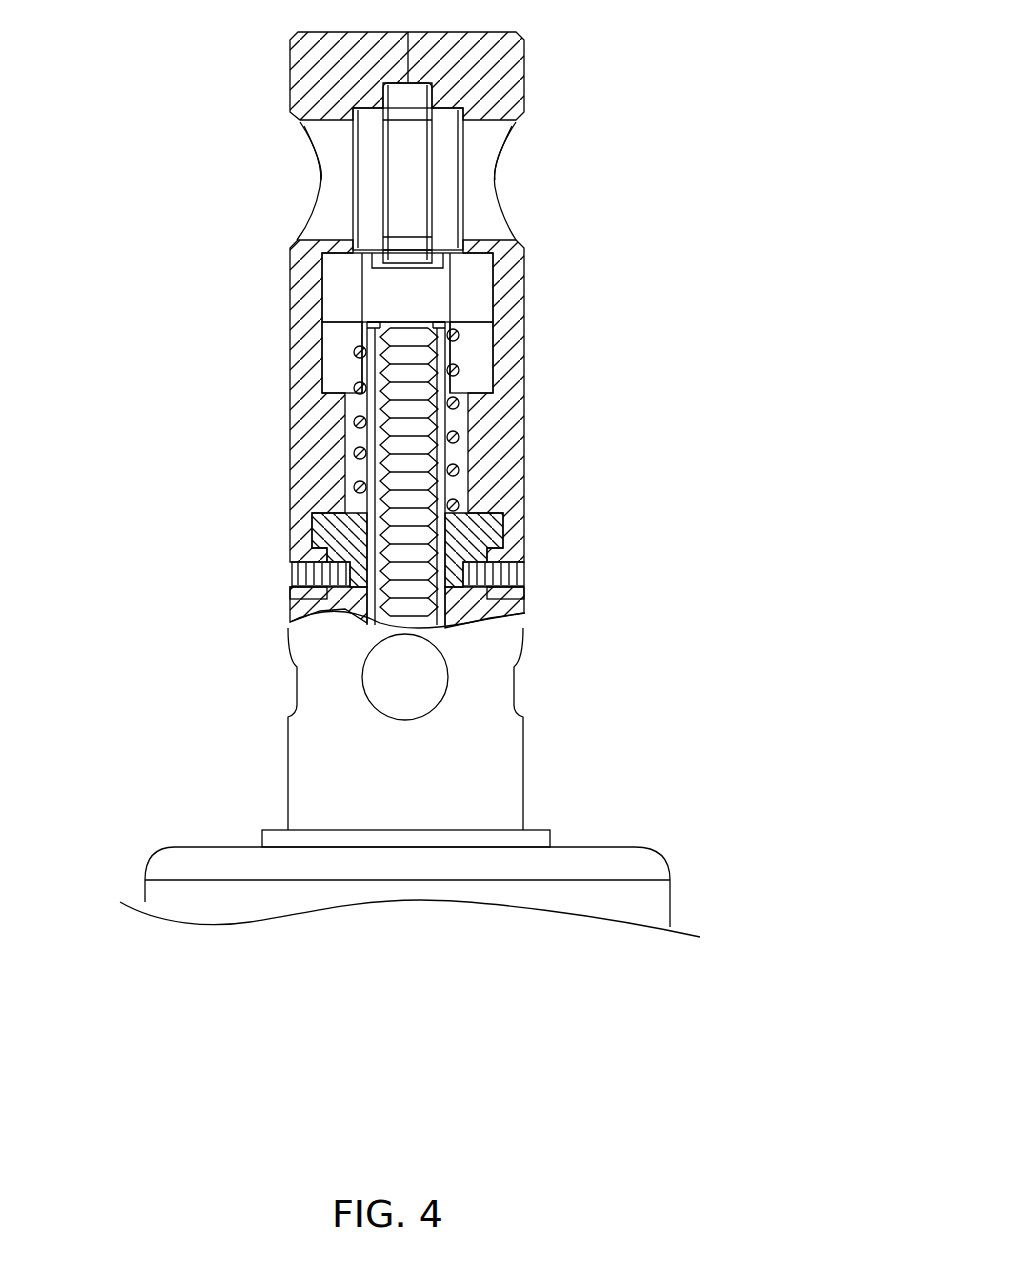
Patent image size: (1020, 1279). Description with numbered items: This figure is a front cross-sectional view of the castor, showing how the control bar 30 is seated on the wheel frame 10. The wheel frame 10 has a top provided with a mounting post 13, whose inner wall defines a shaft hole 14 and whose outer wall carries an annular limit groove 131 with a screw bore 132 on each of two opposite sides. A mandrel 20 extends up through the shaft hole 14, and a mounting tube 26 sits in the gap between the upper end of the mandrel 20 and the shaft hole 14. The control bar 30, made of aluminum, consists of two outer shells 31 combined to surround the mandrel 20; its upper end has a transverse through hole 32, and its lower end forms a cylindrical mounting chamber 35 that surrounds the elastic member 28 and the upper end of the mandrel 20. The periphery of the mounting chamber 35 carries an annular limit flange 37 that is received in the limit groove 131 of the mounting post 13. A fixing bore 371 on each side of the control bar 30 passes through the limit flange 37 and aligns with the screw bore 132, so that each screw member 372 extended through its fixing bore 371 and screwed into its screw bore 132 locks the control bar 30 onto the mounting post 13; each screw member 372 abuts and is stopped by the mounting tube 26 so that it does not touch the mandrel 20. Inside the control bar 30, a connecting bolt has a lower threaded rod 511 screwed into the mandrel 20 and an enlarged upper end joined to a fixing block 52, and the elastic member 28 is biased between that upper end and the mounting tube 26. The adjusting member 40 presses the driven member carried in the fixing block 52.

The wheel frame 10 is at (660, 826).
The mounting post 13 is at (305, 732).
The shaft hole 14 is at (493, 600).
The mandrel 20 is at (345, 405).
The mounting tube 26 is at (347, 530).
The elastic member 28 is at (487, 402).
The control bar 30 is at (448, 401).
The outer shell 31 is at (300, 278).
The transverse through hole 32 is at (493, 147).
The mounting chamber 35 is at (483, 345).
The limit flange 37 is at (495, 553).
The adjusting member 40 is at (334, 157).
The fixing block 52 is at (440, 285).
The limit groove 131 is at (469, 565).
The screw bore 132 is at (534, 586).
The fixing bore 371 is at (308, 593).
The screw member 372 is at (483, 575).
The threaded rod 511 is at (357, 372).